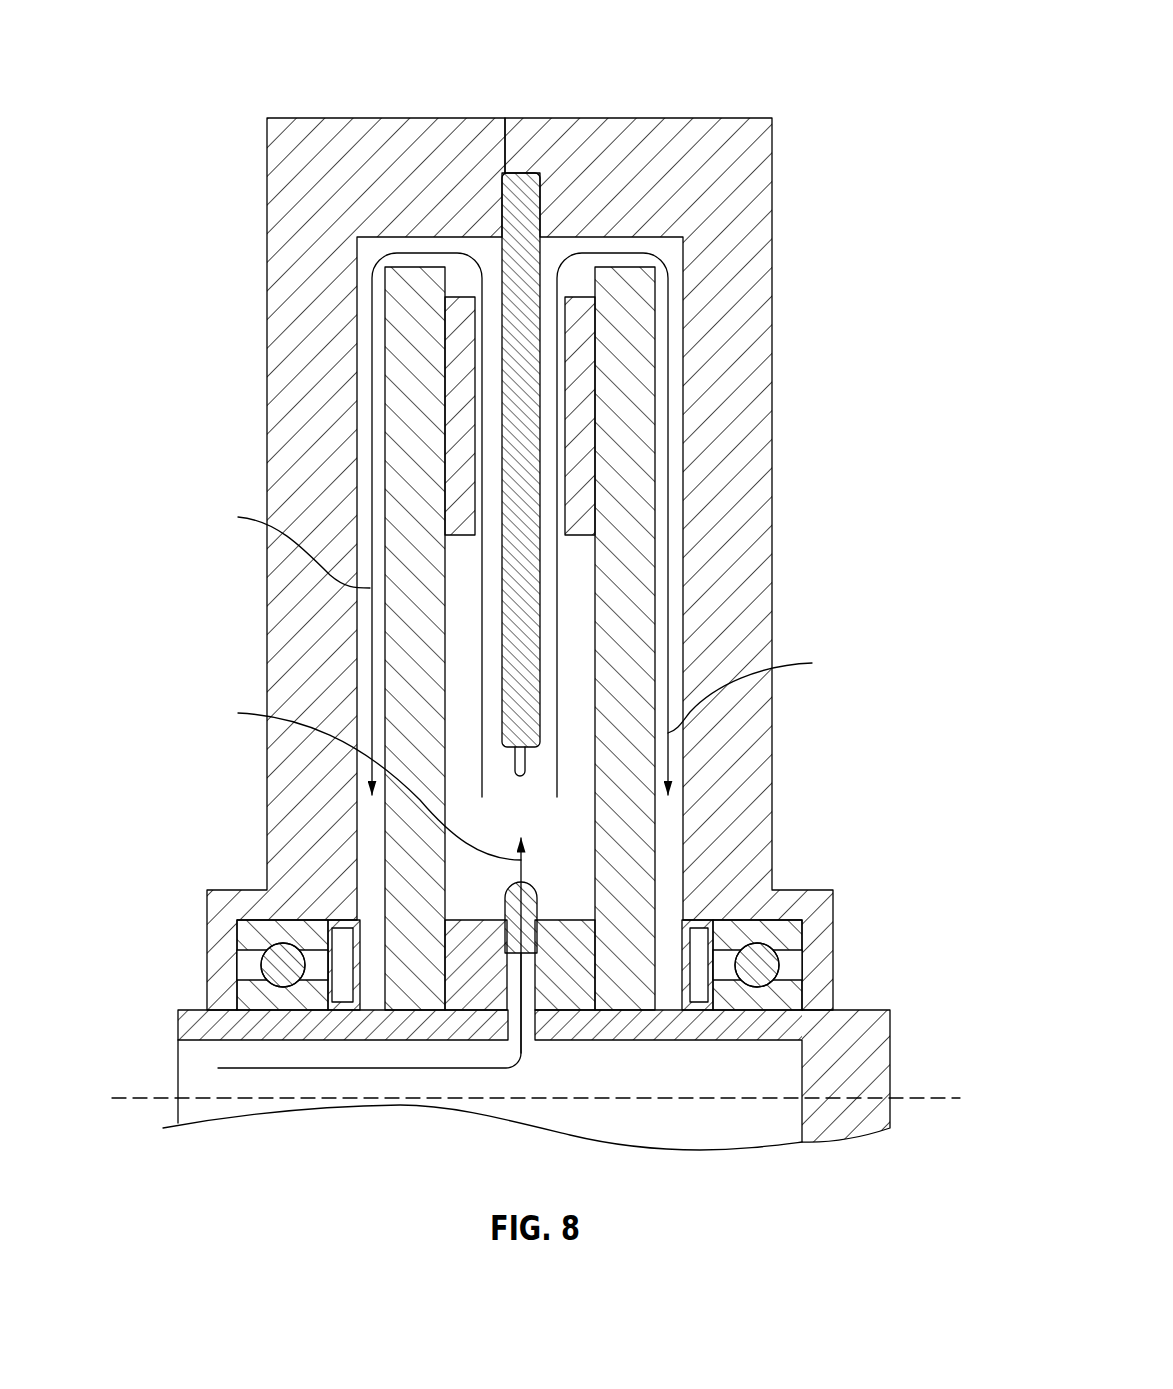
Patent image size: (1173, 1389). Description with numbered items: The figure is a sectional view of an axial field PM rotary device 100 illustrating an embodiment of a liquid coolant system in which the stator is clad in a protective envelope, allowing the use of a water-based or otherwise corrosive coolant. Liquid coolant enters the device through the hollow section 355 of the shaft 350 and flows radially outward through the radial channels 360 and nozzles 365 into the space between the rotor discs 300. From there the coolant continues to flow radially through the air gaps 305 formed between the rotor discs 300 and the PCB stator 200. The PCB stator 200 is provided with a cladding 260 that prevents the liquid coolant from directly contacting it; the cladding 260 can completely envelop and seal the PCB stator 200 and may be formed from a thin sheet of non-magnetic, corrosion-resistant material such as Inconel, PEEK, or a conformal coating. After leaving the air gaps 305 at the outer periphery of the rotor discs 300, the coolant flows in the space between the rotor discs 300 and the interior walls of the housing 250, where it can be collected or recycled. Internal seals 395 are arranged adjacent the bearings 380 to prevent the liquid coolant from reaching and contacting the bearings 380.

The axial field PM rotary device 100 is at (524, 603).
The PCB stator 200 is at (510, 539).
The housing 250 is at (288, 228).
The cladding 260 is at (540, 530).
The rotor discs 300 is at (417, 688).
The air gaps 305 is at (492, 470).
The shaft 350 is at (866, 1010).
The hollow section 355 is at (565, 1057).
The radial channels 360 is at (540, 977).
The nozzles 365 is at (503, 900).
The bearings 380 is at (232, 976).
The internal seals 395 is at (345, 1013).